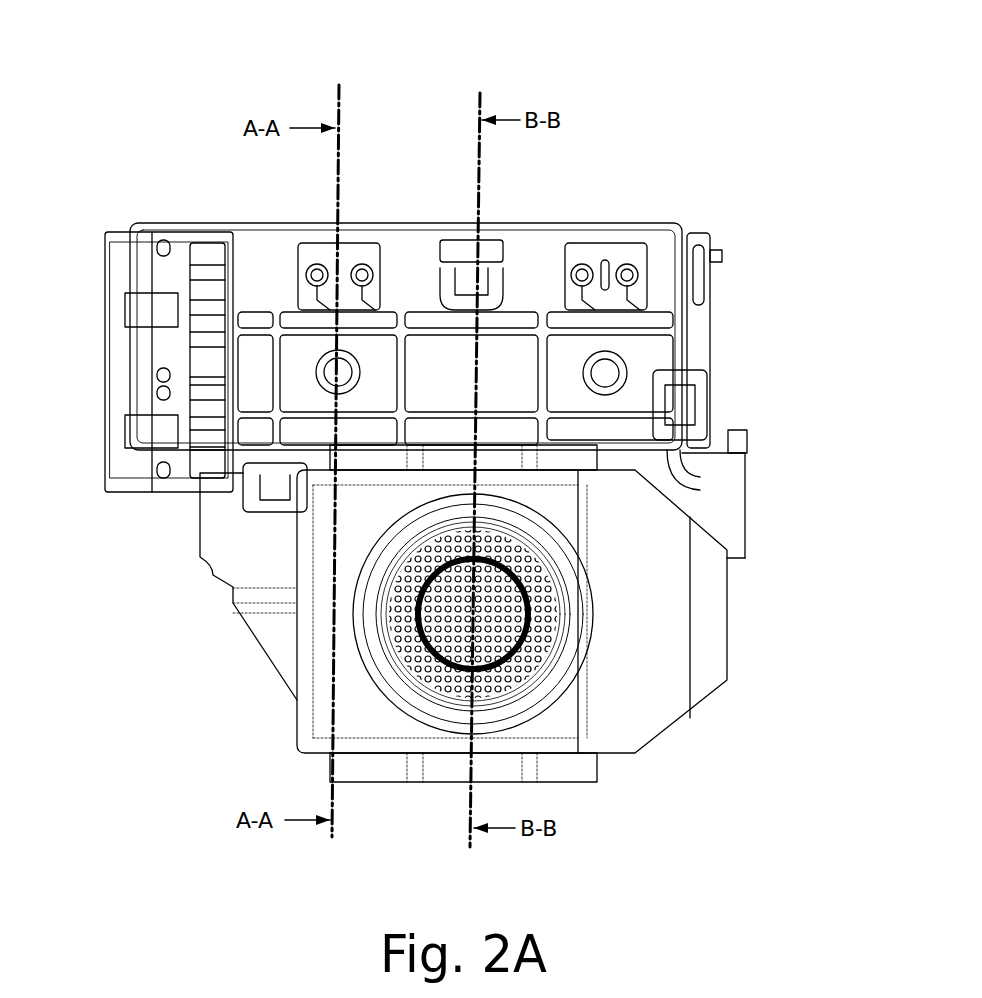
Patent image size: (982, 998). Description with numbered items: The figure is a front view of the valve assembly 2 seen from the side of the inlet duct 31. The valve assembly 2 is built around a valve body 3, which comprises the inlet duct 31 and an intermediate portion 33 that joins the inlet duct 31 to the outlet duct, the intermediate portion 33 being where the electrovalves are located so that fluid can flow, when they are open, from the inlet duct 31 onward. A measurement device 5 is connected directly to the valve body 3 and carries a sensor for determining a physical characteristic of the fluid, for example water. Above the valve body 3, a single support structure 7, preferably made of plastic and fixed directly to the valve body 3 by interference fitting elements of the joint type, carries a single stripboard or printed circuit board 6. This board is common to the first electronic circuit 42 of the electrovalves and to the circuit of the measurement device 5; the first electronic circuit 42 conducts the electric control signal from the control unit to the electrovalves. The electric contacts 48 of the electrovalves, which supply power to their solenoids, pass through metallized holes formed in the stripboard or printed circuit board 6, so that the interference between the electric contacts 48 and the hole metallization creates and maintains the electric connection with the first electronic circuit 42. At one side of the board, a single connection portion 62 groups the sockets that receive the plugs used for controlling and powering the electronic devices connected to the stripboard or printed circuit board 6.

The valve assembly 2 is at (770, 128).
The valve body 3 is at (846, 500).
The measurement device 5 is at (764, 380).
The stripboard or printed circuit board 6 is at (313, 250).
The support structure 7 is at (548, 222).
The inlet duct 31 is at (420, 708).
The intermediate portion 33 is at (208, 622).
The first electronic circuit 42 is at (262, 258).
The electric contacts 48 is at (368, 262).
The connection portion 62 is at (90, 340).